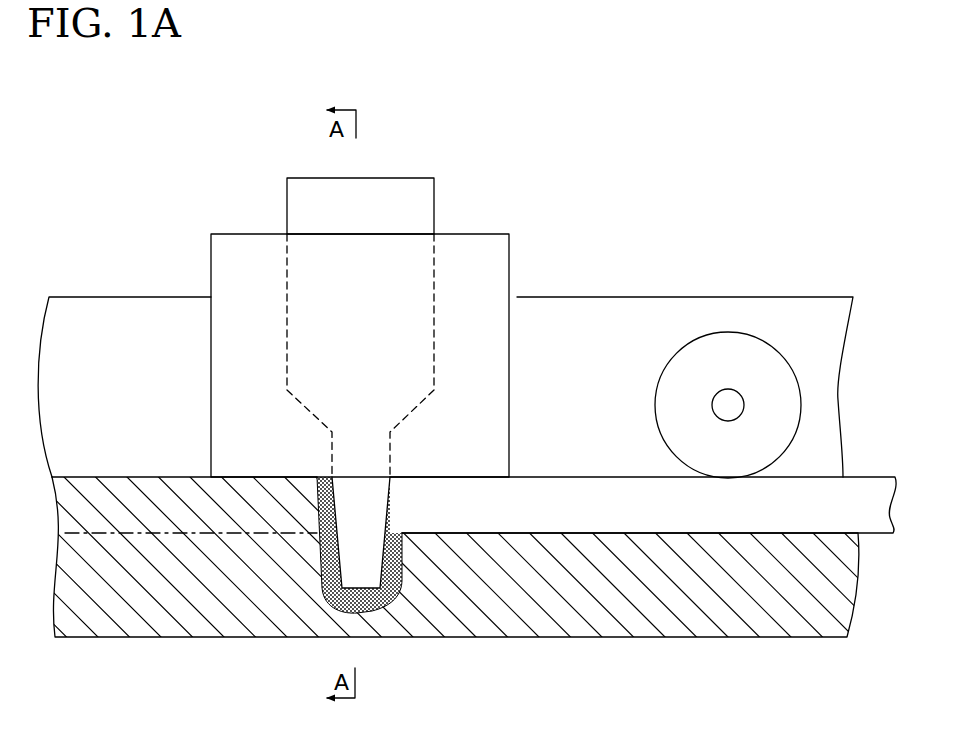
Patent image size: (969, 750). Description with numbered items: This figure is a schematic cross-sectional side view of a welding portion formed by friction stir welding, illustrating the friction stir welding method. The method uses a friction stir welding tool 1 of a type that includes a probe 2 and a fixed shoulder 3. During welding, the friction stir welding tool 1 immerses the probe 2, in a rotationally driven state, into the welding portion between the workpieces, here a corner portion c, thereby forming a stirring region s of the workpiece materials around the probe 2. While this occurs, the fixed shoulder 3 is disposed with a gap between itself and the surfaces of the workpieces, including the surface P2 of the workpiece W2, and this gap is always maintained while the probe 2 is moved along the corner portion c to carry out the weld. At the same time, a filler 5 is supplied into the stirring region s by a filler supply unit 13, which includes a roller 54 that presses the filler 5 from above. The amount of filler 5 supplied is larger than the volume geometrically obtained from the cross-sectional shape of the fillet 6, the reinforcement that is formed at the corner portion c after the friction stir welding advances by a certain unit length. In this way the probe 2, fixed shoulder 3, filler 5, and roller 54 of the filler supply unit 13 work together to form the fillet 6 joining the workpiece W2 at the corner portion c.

The friction stir welding tool 1 is at (480, 210).
The probe 2 is at (350, 562).
The fixed shoulder 3 is at (243, 253).
The filler 5 is at (873, 487).
The fillet 6 is at (97, 478).
The filler supply unit 13 is at (800, 335).
The roller 54 is at (735, 355).
The surface of workpiece W2 P2 is at (578, 342).
The workpiece W2 is at (658, 295).
The stirring region s is at (397, 592).
The corner portion c is at (722, 533).